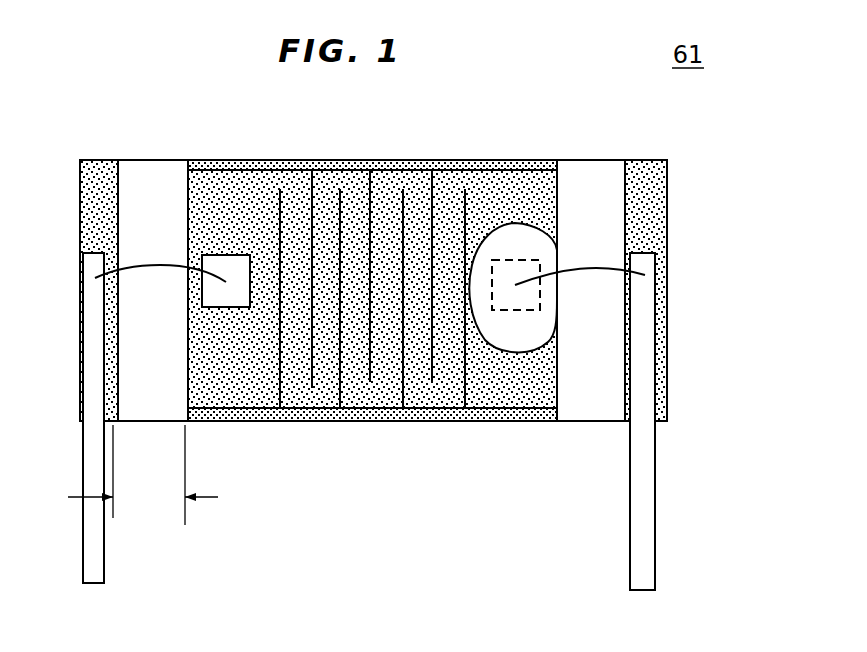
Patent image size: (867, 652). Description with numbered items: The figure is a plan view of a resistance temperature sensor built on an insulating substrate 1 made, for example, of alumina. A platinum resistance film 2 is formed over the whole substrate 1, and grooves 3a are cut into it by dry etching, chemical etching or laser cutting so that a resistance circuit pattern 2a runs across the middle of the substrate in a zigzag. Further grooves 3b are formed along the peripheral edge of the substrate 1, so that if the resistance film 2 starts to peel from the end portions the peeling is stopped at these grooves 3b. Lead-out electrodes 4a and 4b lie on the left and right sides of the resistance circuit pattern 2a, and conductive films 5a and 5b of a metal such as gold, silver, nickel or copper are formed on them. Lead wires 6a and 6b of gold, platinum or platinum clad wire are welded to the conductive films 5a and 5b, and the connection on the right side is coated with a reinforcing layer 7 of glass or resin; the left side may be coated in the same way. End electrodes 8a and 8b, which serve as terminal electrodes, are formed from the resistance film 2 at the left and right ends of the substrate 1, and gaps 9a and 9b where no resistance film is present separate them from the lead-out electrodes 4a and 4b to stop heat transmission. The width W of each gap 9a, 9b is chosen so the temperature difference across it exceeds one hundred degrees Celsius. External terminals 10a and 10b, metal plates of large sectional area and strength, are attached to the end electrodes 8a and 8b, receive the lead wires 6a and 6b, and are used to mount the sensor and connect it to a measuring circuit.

The insulating substrate 1 is at (672, 199).
The resistance film 2 is at (327, 183).
The resistance circuit pattern 2a is at (343, 398).
The grooves 3a is at (278, 400).
The grooves 3b is at (383, 170).
The lead-out electrode 4a is at (222, 205).
The lead-out electrode 4b is at (481, 185).
The conductive film 5a is at (236, 265).
The conductive film 5b is at (513, 263).
The lead wire 6a is at (152, 262).
The lead wire 6b is at (592, 262).
The reinforcing layer 7 is at (532, 243).
The end electrode 8a is at (98, 175).
The end electrode 8b is at (645, 175).
The gap 9a is at (147, 400).
The gap 9b is at (582, 410).
The external terminal 10a is at (95, 553).
The external terminal 10b is at (637, 545).